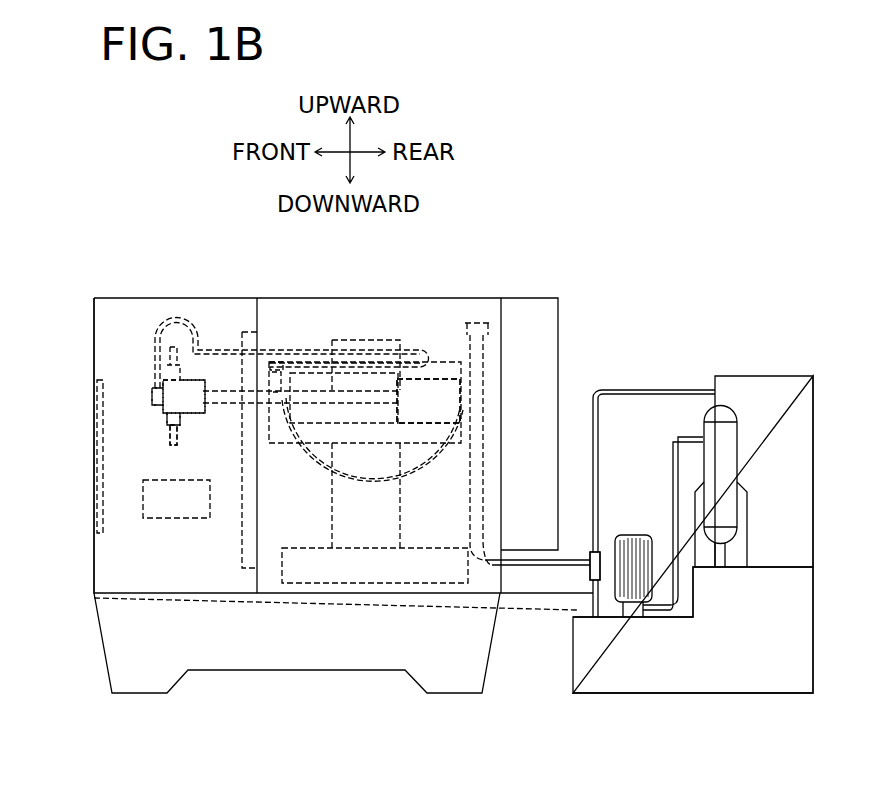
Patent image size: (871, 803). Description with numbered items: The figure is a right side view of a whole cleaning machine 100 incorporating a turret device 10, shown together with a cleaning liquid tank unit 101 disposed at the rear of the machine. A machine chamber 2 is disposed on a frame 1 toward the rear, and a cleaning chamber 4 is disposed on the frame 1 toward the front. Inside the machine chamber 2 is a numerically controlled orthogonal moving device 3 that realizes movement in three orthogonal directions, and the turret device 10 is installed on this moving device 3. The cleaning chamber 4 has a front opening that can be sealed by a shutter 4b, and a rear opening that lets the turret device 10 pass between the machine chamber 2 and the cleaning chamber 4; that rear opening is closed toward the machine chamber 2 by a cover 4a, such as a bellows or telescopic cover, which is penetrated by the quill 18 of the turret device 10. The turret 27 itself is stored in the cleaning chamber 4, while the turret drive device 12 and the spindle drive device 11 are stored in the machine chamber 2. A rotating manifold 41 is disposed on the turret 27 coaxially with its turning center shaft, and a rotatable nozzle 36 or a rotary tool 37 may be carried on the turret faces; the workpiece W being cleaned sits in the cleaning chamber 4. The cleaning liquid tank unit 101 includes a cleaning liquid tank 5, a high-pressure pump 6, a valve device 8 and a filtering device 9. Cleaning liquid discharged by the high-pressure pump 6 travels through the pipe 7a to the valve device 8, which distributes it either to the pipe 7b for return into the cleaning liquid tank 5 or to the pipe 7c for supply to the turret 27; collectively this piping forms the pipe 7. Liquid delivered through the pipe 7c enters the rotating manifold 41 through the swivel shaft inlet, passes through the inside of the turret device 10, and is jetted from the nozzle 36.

The cleaning machine 100 is at (599, 241).
The cleaning liquid tank unit 101 is at (711, 330).
The frame 1 is at (357, 670).
The machine chamber 2 is at (303, 327).
The orthogonal moving device 3 is at (400, 328).
The cleaning chamber 4 is at (113, 347).
The cover 4a is at (260, 312).
The shutter 4b is at (103, 513).
The cleaning liquid tank 5 is at (712, 660).
The high-pressure pump 6 is at (790, 445).
The pipe 7 is at (657, 752).
The pipe 7a is at (601, 593).
The pipe 7b is at (593, 583).
The pipe 7c is at (167, 318).
The valve device 8 is at (592, 552).
The filtering device 9 is at (730, 410).
The turret device 10 is at (210, 372).
The spindle drive device 11 is at (457, 337).
The turret drive device 12 is at (428, 393).
The quill 18 is at (221, 375).
The turret 27 is at (168, 392).
The nozzle 36 is at (170, 437).
The rotary tool 37 is at (101, 475).
The rotating manifold 41 is at (150, 398).
The workpiece W is at (175, 520).